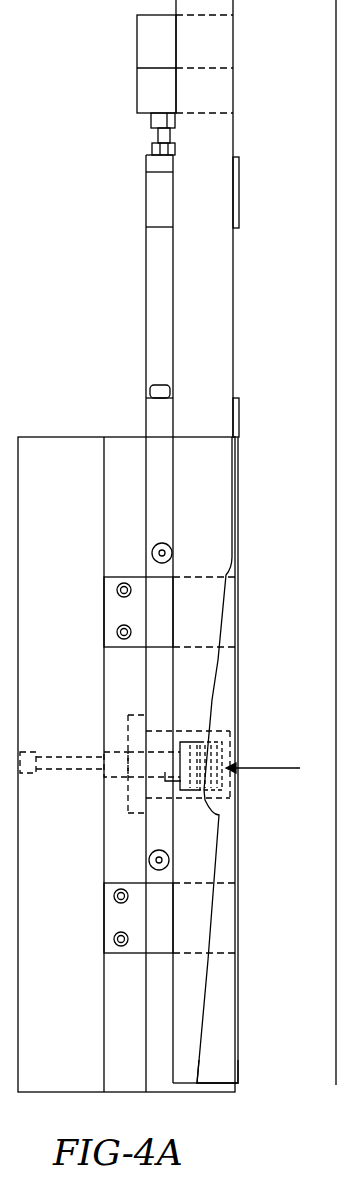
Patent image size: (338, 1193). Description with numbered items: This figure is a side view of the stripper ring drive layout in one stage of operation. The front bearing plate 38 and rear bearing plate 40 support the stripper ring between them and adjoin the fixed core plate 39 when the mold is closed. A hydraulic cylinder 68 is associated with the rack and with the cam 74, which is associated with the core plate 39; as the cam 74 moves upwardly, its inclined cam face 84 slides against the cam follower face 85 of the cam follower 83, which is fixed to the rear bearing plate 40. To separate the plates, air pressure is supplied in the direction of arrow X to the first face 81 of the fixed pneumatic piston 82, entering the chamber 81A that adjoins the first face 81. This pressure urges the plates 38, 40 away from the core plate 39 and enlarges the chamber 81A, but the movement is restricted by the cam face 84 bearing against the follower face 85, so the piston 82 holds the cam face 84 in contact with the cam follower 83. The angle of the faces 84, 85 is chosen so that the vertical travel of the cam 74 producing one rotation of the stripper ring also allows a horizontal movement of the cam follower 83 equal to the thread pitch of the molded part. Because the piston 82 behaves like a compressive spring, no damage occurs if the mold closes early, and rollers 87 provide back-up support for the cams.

The front bearing plate 38 is at (76, 497).
The fixed core plate 39 is at (216, 995).
The rear bearing plate 40 is at (127, 537).
The hydraulic cylinder 68 is at (172, 280).
The cam 74 is at (203, 348).
The first face 81 is at (233, 774).
The chamber 81A is at (225, 742).
The fixed pneumatic piston 82 is at (165, 790).
The cam follower 83 is at (218, 945).
The cam face 84 is at (215, 667).
The cam follower face 85 is at (224, 626).
The rollers 87 is at (172, 548).
The arrow X is at (263, 769).